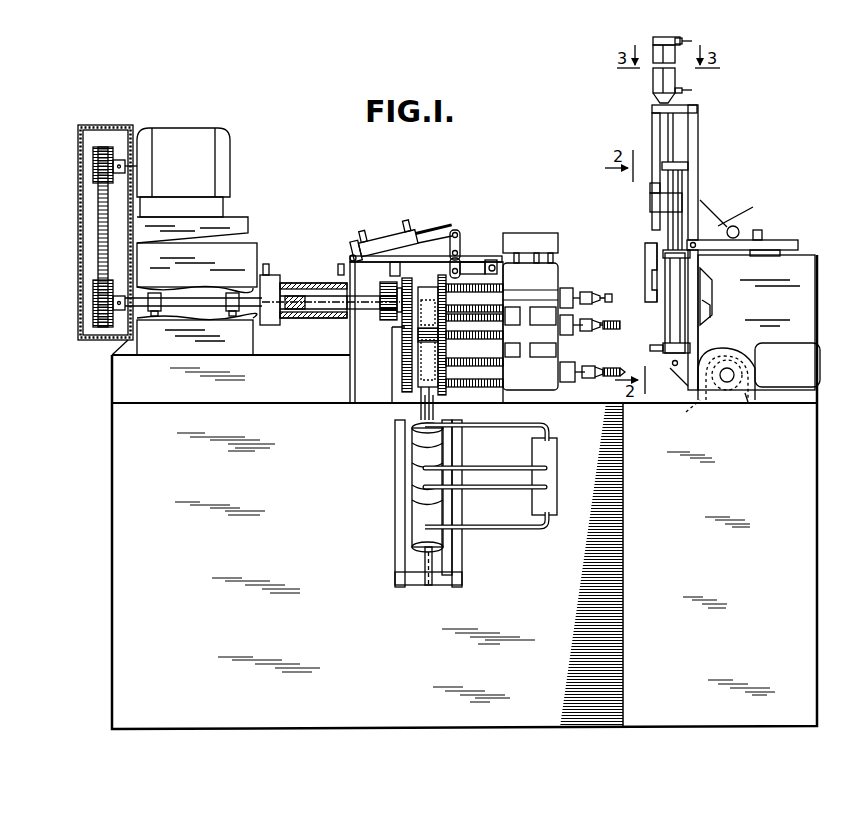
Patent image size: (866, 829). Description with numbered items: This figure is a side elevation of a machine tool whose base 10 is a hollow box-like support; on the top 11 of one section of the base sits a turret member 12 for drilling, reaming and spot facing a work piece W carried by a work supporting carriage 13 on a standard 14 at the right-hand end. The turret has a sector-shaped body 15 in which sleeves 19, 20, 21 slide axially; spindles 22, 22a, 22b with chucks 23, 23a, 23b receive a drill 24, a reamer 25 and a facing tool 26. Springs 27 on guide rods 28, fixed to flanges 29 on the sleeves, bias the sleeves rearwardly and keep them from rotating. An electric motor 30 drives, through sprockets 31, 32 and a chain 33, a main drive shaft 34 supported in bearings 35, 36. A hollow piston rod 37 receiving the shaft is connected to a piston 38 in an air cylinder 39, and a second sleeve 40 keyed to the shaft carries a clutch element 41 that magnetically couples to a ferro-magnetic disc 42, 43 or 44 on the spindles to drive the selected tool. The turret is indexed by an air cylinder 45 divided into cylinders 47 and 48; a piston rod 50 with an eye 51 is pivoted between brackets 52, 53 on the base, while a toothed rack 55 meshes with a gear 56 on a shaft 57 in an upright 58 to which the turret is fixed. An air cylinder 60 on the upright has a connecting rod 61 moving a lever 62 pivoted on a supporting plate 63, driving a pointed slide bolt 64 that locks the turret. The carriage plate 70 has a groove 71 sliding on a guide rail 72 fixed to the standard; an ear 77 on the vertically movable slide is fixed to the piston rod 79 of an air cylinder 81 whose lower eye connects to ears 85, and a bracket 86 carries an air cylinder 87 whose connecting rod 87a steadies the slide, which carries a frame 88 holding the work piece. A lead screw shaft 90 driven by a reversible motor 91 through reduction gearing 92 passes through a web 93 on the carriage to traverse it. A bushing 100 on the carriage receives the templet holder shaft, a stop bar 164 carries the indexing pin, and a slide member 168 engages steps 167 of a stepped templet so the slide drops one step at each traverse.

The base 10 is at (112, 563).
The top of base 11 is at (125, 400).
The turret member 12 is at (452, 222).
The work supporting carriage 13 is at (710, 180).
The standard 14 is at (815, 312).
The turret body 15 is at (545, 268).
The sleeve 19 is at (570, 288).
The sleeve 20 is at (575, 335).
The sleeve 21 is at (566, 382).
The spindle 22 is at (588, 366).
The spindle 22a is at (590, 332).
The spindle 22b is at (589, 288).
The chuck 23 is at (588, 378).
The chuck 23a is at (600, 324).
The chuck 23b is at (575, 322).
The drill 24 is at (612, 376).
The reamer 25 is at (617, 329).
The facing tool 26 is at (609, 294).
The spring 27 is at (505, 304).
The guide rod 28 is at (505, 288).
The flange 29 is at (446, 290).
The electric motor 30 is at (186, 130).
The sprocket 31 is at (100, 179).
The sprocket 32 is at (100, 291).
The chain 33 is at (103, 227).
The main drive shaft 34 is at (185, 306).
The bearing 35 is at (155, 293).
The bearing 36 is at (232, 293).
The piston rod 37 is at (302, 283).
The piston 38 is at (292, 312).
The air cylinder 39 is at (267, 264).
The second sleeve 40 is at (340, 264).
The clutch element 41 is at (398, 318).
The ferro-magnetic disc 42 is at (386, 286).
The ferro-magnetic disc 43 is at (406, 336).
The ferro-magnetic disc 44 is at (404, 387).
The air cylinder 45 is at (420, 510).
The cylinder 47 is at (440, 512).
The cylinder 48 is at (440, 452).
The piston rod 50 is at (424, 544).
The eye 51 is at (430, 585).
The bracket 52 is at (398, 568).
The bracket 53 is at (462, 565).
The toothed rack 55 is at (421, 416).
The gear 56 is at (420, 356).
The shaft 57 is at (448, 352).
The upright 58 is at (420, 364).
The air cylinder 60 is at (391, 236).
The connecting rod 61 is at (430, 238).
The lever 62 is at (461, 238).
The supporting plate 63 is at (472, 262).
The slide bolt 64 is at (494, 262).
The carriage plate 70 is at (696, 192).
The groove 71 is at (712, 284).
The guide rail 72 is at (712, 306).
The ear 77 is at (686, 166).
The piston rod 79 is at (676, 186).
The air cylinder 81 is at (668, 320).
The ears 85 is at (679, 322).
The bracket 86 is at (697, 108).
The air cylinder 87 is at (655, 85).
The connecting rod 87a is at (668, 116).
The frame 88 is at (645, 243).
The lead screw shaft 90 is at (722, 390).
The motor 91 is at (820, 365).
The reduction gearing 92 is at (742, 411).
The web 93 is at (682, 413).
The bushing 100 is at (725, 228).
The stop bar 164 is at (770, 240).
The steps 167 is at (650, 190).
The slide member 168 is at (650, 205).
The work piece W is at (648, 265).